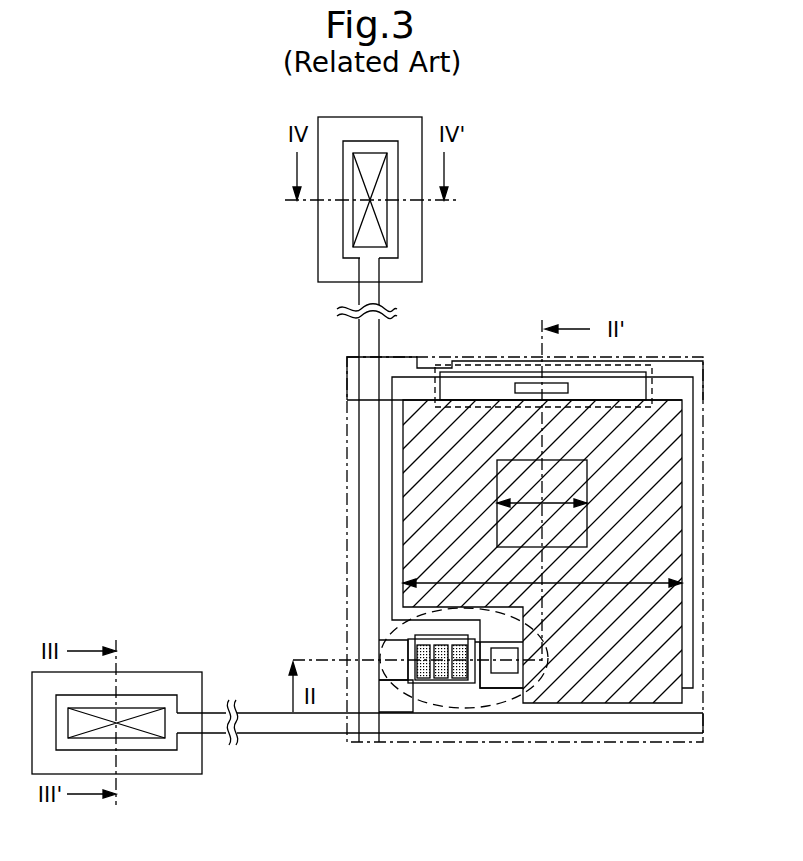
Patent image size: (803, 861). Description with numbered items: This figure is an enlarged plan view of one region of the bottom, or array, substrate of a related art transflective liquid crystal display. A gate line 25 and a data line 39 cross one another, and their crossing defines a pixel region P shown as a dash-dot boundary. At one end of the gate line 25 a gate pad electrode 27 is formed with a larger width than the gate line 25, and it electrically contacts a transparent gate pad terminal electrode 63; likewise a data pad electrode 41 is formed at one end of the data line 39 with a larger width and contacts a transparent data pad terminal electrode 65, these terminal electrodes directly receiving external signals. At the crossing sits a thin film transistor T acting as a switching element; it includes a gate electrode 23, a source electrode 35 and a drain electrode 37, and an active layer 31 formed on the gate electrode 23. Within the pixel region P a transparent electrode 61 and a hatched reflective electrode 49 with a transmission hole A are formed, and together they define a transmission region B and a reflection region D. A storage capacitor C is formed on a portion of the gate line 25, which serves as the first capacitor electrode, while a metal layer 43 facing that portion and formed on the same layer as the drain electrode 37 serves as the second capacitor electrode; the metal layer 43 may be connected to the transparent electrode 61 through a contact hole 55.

The gate electrode 23 is at (390, 628).
The gate line 25 is at (268, 733).
The gate pad electrode 27 is at (155, 750).
The active layer 31 is at (440, 683).
The source electrode 35 is at (397, 683).
The drain electrode 37 is at (503, 680).
The data line 39 is at (359, 380).
The data pad electrode 41 is at (398, 247).
The metal layer 43 is at (472, 372).
The reflective electrode 49 is at (395, 433).
The contact hole 55 is at (520, 383).
The transparent electrode 61 is at (380, 470).
The transparent gate pad terminal electrode 63 is at (155, 672).
The transparent data pad terminal electrode 65 is at (318, 247).
The transmission hole A is at (587, 525).
The transmission region B is at (542, 493).
The storage capacitor C is at (652, 392).
The reflection region D is at (542, 572).
The pixel region P is at (703, 432).
The thin film transistor T is at (460, 712).